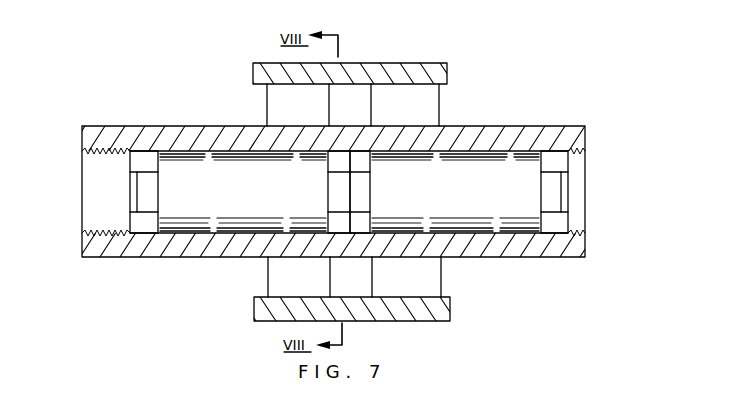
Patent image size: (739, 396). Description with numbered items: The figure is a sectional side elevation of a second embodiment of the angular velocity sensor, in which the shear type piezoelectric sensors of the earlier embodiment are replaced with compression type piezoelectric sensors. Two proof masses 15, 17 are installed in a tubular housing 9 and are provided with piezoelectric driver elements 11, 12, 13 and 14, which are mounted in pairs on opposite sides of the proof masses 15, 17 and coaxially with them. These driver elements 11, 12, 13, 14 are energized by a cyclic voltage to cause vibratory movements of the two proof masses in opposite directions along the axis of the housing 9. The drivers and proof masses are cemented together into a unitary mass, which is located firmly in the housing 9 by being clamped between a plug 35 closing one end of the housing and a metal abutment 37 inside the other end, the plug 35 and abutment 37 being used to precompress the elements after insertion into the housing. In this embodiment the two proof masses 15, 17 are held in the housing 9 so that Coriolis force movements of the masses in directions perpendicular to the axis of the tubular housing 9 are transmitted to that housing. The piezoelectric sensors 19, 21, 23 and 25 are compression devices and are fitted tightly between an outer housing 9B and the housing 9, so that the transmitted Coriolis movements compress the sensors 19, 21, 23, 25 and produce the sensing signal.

The tubular housing 9 is at (378, 240).
The outer housing 9B is at (380, 64).
The piezoelectric driver element 11 is at (155, 198).
The piezoelectric driver element 12 is at (337, 199).
The piezoelectric driver element 13 is at (366, 187).
The piezoelectric driver element 14 is at (550, 192).
The proof mass 15 is at (242, 203).
The proof mass 17 is at (459, 203).
The piezoelectric sensor 19 is at (267, 107).
The piezoelectric sensor 21 is at (267, 120).
The piezoelectric sensor 23 is at (362, 98).
The piezoelectric sensor 25 is at (362, 114).
The plug 35 is at (83, 192).
The abutment 37 is at (585, 190).